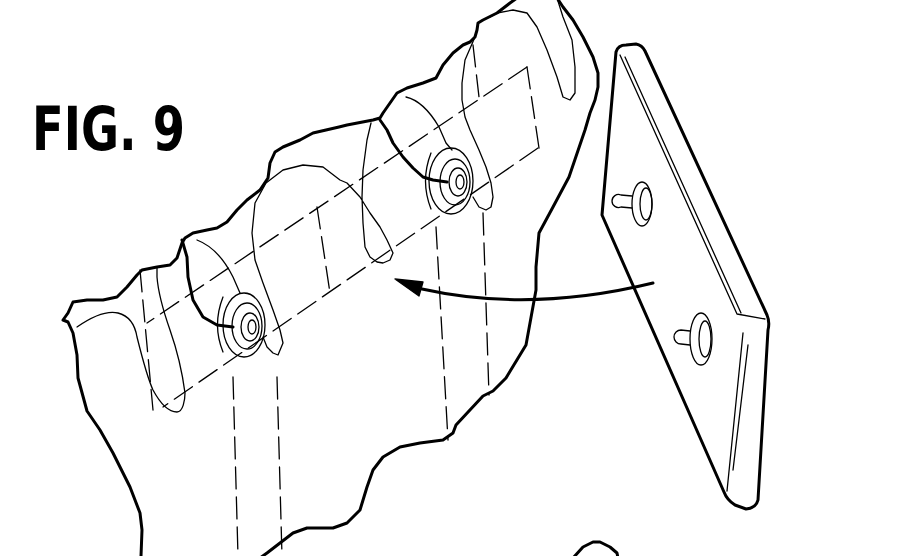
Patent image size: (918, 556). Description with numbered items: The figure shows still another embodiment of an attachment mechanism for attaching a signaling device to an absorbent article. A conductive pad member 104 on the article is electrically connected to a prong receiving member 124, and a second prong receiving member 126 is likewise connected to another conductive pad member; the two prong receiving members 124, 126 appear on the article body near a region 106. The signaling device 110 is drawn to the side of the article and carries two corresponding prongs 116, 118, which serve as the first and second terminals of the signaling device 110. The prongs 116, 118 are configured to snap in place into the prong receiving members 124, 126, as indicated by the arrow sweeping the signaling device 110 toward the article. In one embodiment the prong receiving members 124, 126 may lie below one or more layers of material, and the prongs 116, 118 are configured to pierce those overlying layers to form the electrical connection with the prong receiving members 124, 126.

The conductive pad member 104 is at (135, 276).
The rim lip of housing 106 is at (475, 32).
The signaling device 110 is at (695, 192).
The prong 116 is at (676, 342).
The prong 118 is at (614, 196).
The prong receiving member 124 is at (182, 238).
The prong receiving member 126 is at (380, 119).